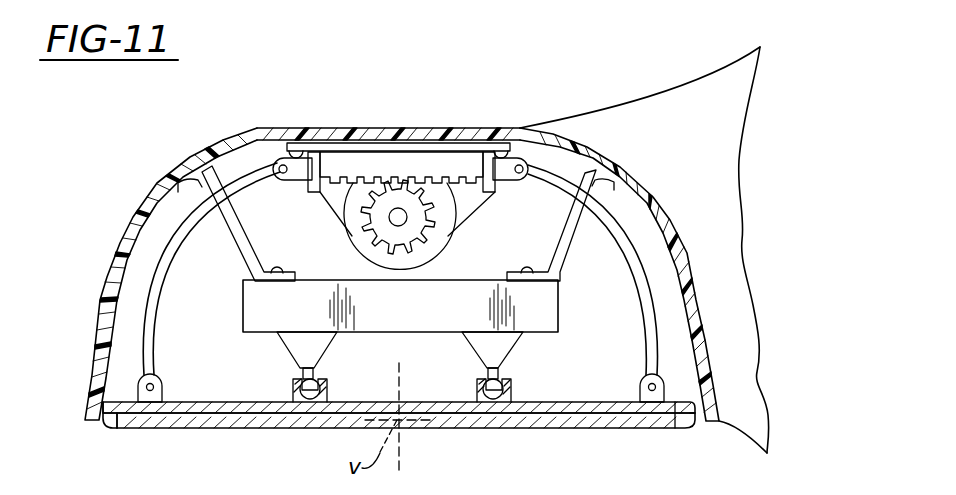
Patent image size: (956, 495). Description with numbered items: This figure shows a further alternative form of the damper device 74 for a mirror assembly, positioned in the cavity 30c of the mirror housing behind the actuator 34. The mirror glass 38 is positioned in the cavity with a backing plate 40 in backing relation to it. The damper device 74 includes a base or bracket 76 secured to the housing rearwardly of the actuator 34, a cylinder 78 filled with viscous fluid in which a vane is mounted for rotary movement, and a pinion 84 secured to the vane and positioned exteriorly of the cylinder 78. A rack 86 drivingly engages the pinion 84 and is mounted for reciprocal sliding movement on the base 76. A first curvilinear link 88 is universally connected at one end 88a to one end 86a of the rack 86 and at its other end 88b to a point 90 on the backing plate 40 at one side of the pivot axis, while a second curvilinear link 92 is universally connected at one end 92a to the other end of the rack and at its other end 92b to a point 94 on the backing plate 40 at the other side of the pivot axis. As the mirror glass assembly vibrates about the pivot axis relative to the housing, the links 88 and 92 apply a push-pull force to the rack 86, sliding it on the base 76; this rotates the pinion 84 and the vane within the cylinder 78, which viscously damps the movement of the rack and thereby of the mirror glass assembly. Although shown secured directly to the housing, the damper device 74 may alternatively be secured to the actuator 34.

The cavity 30c is at (665, 331).
The actuator 34 is at (416, 320).
The mirror glass 38 is at (262, 429).
The backing plate 40 is at (380, 402).
The damper device 74 is at (511, 104).
The base or bracket 76 is at (355, 128).
The cylinder 78 is at (456, 220).
The pinion 84 is at (373, 220).
The rack 86 is at (450, 170).
The one end of the rack 86a is at (275, 128).
The first curvilinear link 88 is at (149, 274).
The one end of the first curvilinear link 88a is at (280, 183).
The another end of the first curvilinear link 88b is at (167, 380).
The point on the backing plate 90 is at (141, 428).
The second curvilinear link 92 is at (690, 310).
The one end of the second curvilinear link 92a is at (521, 182).
The another end of the second curvilinear link 92b is at (667, 380).
The point on the backing plate 94 is at (645, 428).